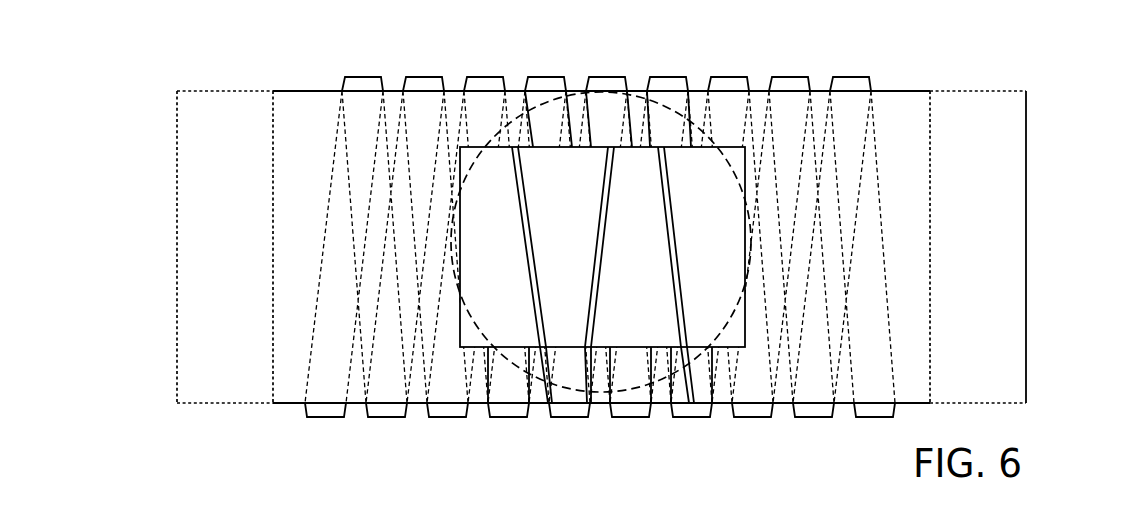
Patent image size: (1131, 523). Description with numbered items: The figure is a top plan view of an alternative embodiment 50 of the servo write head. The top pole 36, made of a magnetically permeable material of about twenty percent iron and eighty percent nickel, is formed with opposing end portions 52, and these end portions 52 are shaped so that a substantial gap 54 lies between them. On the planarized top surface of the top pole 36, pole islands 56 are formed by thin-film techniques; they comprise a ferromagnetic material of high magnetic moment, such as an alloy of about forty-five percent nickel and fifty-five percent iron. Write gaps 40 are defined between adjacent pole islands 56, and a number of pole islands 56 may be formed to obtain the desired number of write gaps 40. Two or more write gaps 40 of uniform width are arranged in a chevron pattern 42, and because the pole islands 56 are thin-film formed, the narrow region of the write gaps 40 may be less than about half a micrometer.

The top pole 36 is at (301, 98).
The write gaps 40 is at (602, 278).
The chevron pattern 42 is at (570, 392).
The alternative embodiment of the servo write head 50 is at (648, 241).
The end portions 52 is at (600, 212).
The gap 54 is at (515, 102).
The pole islands 56 is at (505, 272).